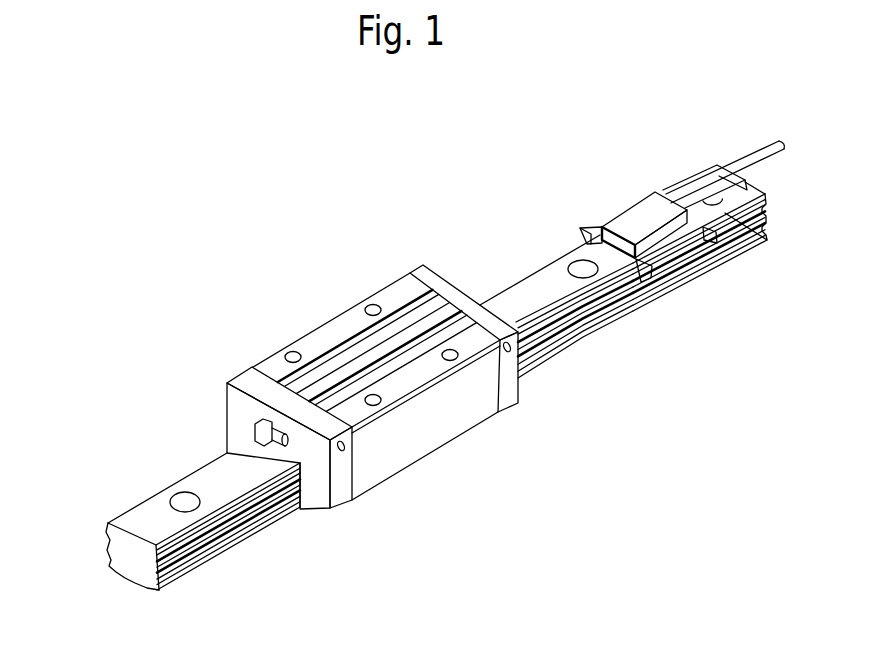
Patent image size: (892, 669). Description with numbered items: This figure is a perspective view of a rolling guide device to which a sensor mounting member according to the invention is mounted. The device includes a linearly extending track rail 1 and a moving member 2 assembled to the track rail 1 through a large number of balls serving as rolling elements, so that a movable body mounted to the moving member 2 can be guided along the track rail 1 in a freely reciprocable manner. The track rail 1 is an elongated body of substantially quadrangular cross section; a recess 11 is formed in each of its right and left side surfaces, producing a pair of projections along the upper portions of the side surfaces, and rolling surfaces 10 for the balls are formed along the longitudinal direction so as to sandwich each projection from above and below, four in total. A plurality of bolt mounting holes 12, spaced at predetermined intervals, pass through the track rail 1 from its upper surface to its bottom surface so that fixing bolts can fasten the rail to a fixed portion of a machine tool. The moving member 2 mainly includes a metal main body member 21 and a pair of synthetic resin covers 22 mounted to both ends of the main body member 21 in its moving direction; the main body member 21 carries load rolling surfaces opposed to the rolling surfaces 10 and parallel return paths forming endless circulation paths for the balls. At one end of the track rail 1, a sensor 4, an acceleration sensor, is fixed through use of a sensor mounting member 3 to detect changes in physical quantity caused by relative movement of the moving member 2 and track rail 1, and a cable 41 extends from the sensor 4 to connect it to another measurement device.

The track rail 1 is at (425, 386).
The rolling surface 10 is at (233, 507).
The recess 11 is at (210, 540).
The bolt mounting hole 12 is at (180, 500).
The moving member 2 is at (391, 379).
The main body member 21 is at (427, 443).
The cover 22 is at (340, 490).
The sensor mounting member 3 is at (682, 182).
The sensor 4 is at (587, 222).
The cable 41 is at (749, 161).